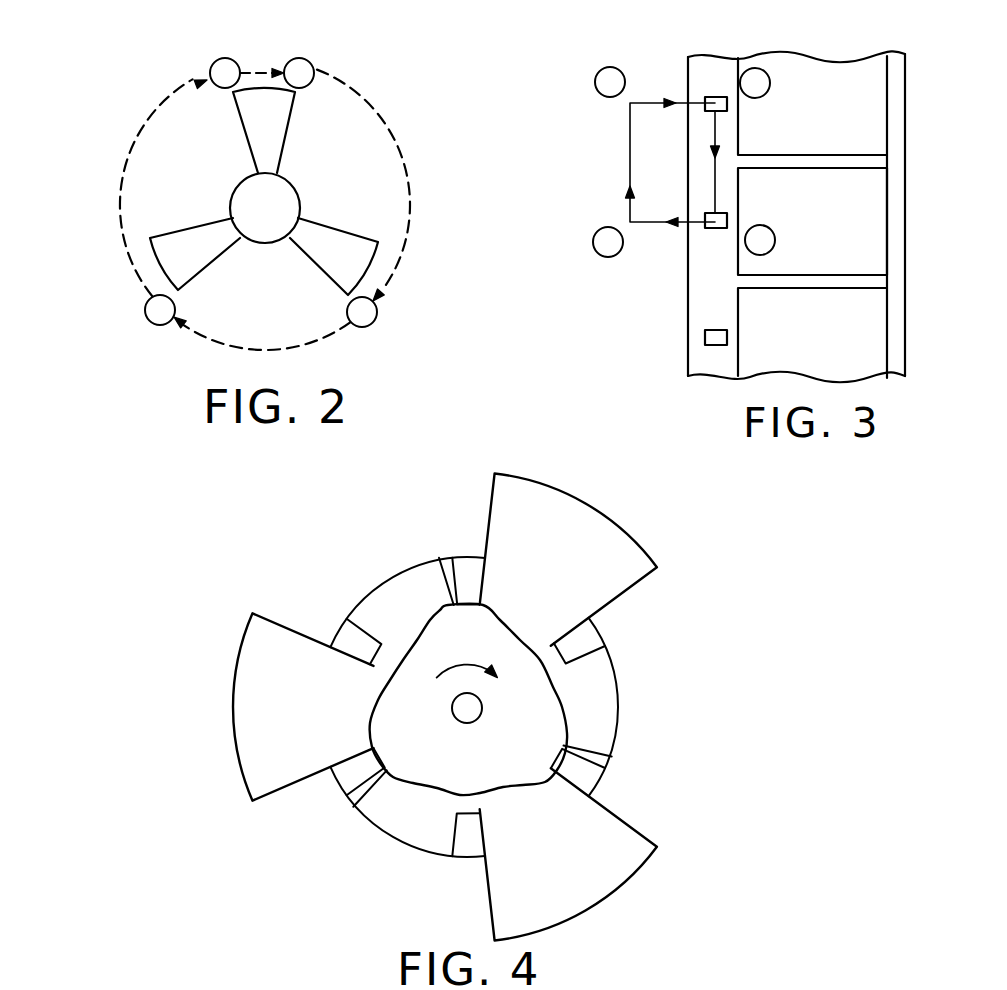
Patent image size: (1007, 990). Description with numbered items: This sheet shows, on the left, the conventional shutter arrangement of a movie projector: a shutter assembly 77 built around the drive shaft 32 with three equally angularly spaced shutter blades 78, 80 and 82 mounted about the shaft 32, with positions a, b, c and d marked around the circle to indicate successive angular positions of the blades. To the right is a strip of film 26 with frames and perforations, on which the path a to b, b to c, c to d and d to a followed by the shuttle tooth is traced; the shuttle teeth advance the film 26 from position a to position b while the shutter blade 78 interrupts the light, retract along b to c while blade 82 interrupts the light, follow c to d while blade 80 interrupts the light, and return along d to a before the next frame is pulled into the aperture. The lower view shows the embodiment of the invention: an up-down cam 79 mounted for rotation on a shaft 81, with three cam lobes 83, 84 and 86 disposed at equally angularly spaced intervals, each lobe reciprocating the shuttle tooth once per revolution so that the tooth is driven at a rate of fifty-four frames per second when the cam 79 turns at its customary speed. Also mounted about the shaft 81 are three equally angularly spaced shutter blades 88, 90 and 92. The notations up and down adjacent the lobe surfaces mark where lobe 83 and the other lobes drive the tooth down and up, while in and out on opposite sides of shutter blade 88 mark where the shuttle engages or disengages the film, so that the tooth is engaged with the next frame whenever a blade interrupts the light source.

In FIG. 3, the film 26 is at (693, 307).
In FIG. 2, the drive shaft 32 is at (298, 193).
In FIG. 2, the shutter assembly 77 is at (112, 186).
In FIG. 2, the shutter blade 78 is at (250, 119).
In FIG. 4, the up-down cam 79 is at (563, 712).
In FIG. 2, the shutter blade 80 is at (354, 264).
In FIG. 4, the shaft 81 is at (483, 705).
In FIG. 2, the shutter blade 82 is at (164, 263).
In FIG. 4, the cam lobe 83 is at (440, 558).
In FIG. 4, the cam lobe 84 is at (612, 755).
In FIG. 4, the cam lobe 86 is at (353, 807).
In FIG. 4, the shutter blade 88 is at (625, 531).
In FIG. 4, the shutter blade 90 is at (619, 888).
In FIG. 4, the shutter blade 92 is at (237, 752).